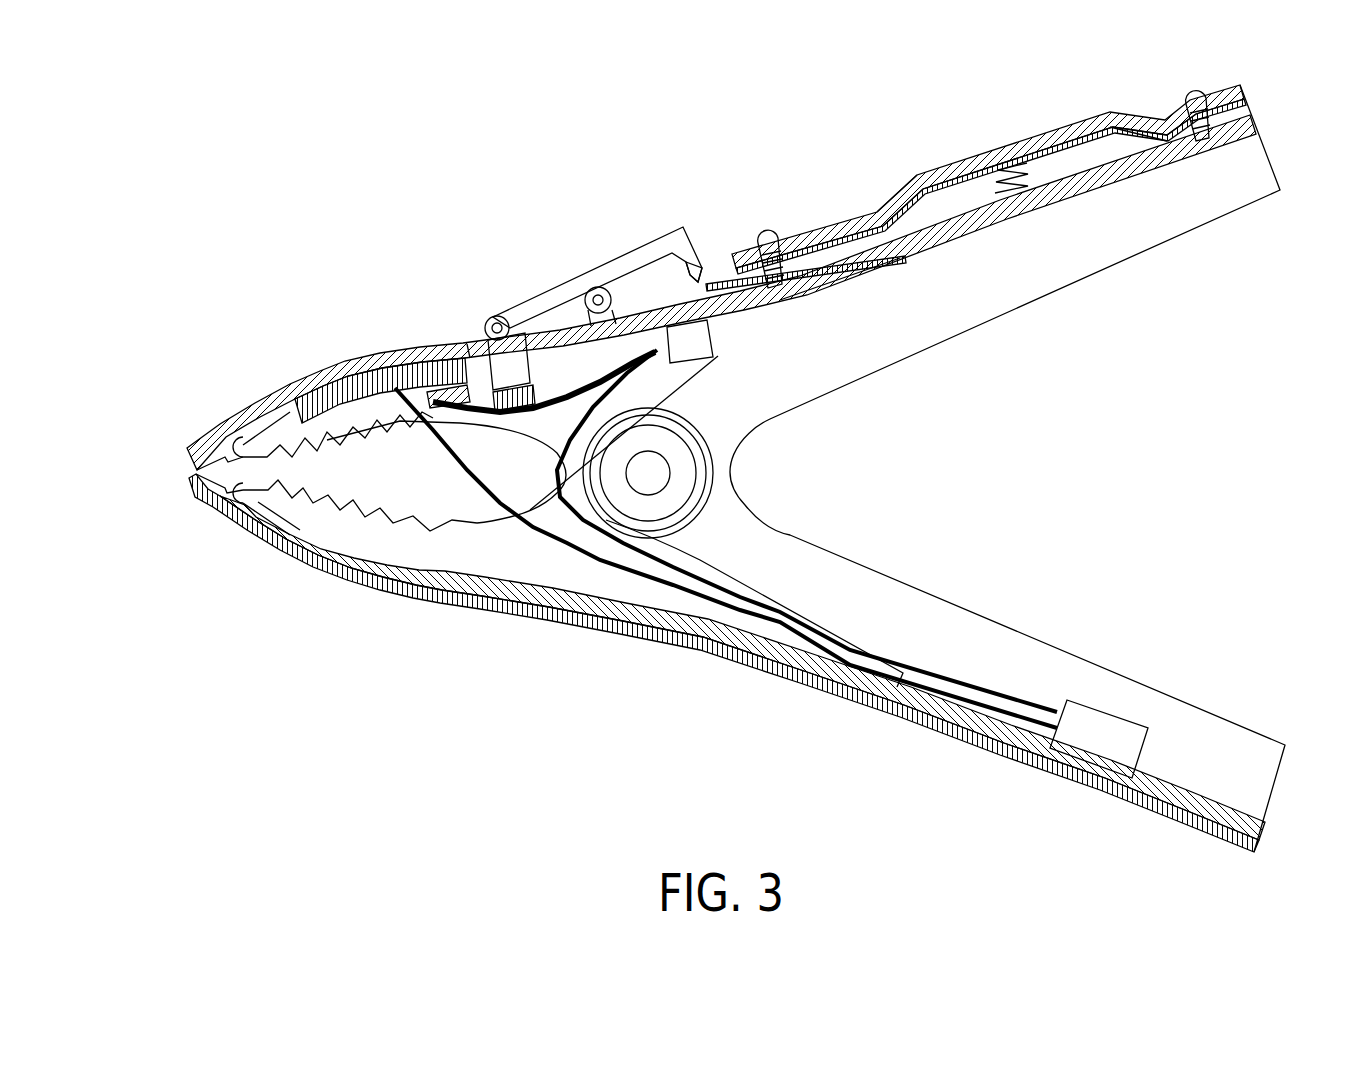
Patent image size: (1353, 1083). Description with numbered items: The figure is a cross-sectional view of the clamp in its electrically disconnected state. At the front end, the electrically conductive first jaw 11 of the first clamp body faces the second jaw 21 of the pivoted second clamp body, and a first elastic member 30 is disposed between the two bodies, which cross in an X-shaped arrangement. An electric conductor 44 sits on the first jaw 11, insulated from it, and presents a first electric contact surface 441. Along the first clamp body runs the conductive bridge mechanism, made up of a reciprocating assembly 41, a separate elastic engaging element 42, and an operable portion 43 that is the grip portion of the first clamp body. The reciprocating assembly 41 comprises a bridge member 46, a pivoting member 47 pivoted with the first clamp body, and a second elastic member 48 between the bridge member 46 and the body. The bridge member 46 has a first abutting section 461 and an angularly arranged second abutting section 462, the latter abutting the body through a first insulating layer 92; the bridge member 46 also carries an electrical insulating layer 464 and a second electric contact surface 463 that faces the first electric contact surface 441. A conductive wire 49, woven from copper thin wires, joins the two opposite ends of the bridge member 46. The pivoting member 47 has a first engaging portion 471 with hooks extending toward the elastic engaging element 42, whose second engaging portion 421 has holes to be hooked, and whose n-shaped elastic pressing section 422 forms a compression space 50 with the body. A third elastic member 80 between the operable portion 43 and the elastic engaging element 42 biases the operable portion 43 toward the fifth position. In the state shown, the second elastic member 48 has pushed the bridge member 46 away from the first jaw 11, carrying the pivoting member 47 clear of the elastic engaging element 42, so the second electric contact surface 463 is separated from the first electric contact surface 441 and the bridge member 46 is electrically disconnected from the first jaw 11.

The first jaw 11 is at (293, 403).
The second jaw 21 is at (280, 545).
The first elastic member 30 is at (760, 595).
The reciprocating assembly 41 is at (595, 231).
The elastic engaging element 42 is at (989, 179).
The second engaging portion 421 is at (722, 258).
The elastic pressing section 422 is at (940, 180).
The operable portion 43 is at (1102, 175).
The electric conductor 44 is at (348, 358).
The first electric contact surface 441 is at (477, 340).
The bridge member 46 is at (570, 547).
The first abutting section 461 is at (478, 395).
The second abutting section 462 is at (655, 355).
The second electric contact surface 463 is at (442, 400).
The electrical insulating layer 464 is at (510, 400).
The pivoting member 47 is at (599, 237).
The first engaging portion 471 is at (703, 268).
The second elastic member 48 is at (543, 295).
The conductive wire 49 is at (433, 412).
The compression space 50 is at (1100, 140).
The third elastic member 80 is at (1030, 168).
The first insulating layer 92 is at (822, 290).